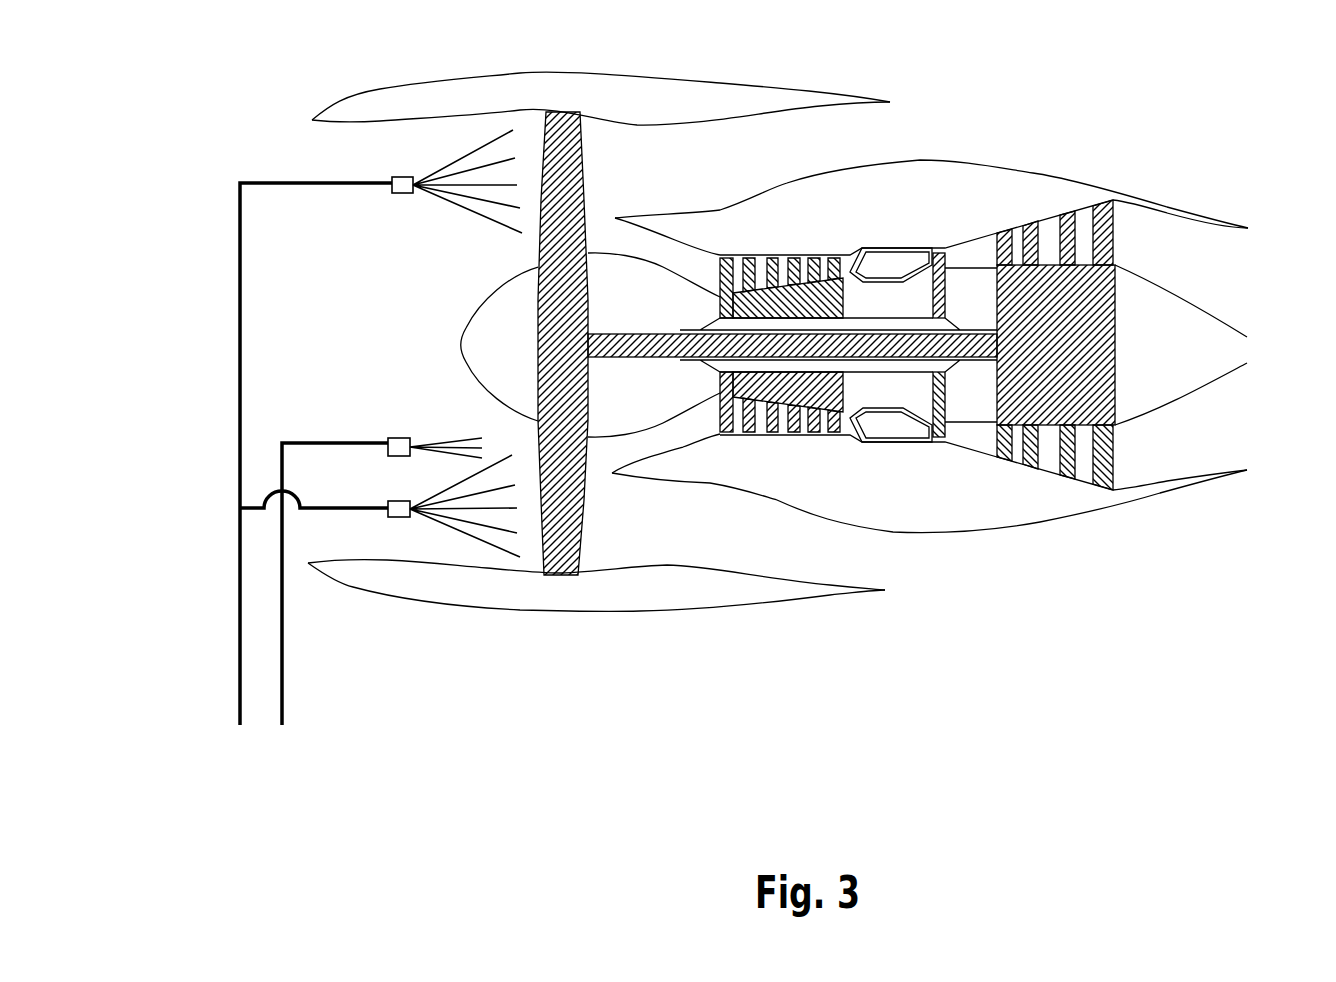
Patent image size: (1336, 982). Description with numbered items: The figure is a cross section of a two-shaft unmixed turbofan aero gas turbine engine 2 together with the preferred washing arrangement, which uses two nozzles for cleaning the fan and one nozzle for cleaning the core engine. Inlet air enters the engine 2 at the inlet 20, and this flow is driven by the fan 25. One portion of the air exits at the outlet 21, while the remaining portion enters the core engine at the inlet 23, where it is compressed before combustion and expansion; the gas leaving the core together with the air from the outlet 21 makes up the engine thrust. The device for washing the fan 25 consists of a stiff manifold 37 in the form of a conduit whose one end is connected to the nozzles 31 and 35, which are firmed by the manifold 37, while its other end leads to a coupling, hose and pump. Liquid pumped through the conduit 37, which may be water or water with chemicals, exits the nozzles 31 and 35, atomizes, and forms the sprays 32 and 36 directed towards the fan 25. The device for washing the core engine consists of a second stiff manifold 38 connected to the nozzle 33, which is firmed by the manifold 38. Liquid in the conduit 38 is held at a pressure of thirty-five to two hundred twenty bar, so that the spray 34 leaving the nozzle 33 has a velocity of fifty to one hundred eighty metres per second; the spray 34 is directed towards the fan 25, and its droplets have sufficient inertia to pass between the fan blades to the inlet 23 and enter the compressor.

The engine 2 is at (778, 365).
The inlet 20 is at (317, 157).
The outlet 21 is at (880, 128).
The inlet 23 is at (605, 460).
The fan 25 is at (588, 193).
The nozzle 31 is at (400, 517).
The spray 32 is at (485, 533).
The nozzle 33 is at (397, 438).
The spray 34 is at (468, 438).
The nozzle 35 is at (405, 193).
The spray 36 is at (467, 193).
The stiff manifold 37 is at (238, 632).
The stiff manifold 38 is at (283, 680).